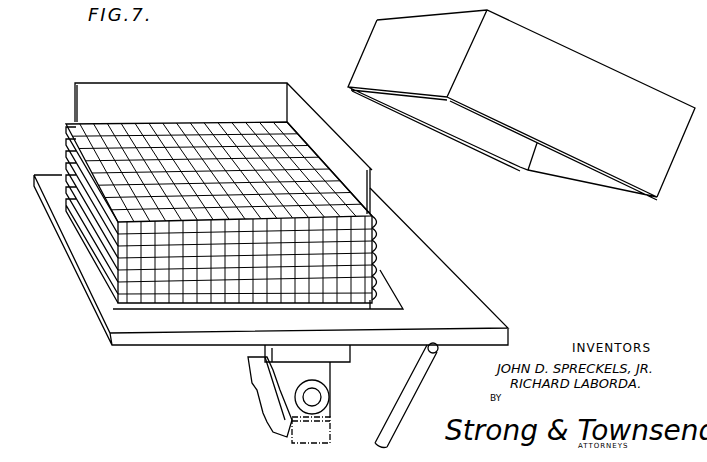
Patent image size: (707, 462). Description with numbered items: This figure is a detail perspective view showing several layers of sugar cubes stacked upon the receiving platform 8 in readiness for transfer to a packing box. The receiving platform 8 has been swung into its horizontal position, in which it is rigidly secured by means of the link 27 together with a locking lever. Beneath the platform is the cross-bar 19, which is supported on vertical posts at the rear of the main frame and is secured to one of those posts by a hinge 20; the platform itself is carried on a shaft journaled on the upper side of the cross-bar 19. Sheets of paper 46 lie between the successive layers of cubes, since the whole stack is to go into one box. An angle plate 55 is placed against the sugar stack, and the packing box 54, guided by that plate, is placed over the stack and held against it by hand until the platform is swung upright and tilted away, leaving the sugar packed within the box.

The receiving platform 8 is at (452, 300).
The cross-bar 19 is at (270, 408).
The hinge 20 is at (313, 397).
The link 27 is at (417, 385).
The sheets of paper 46 is at (378, 230).
The packing box 54 is at (521, 105).
The angle plate 55 is at (373, 185).